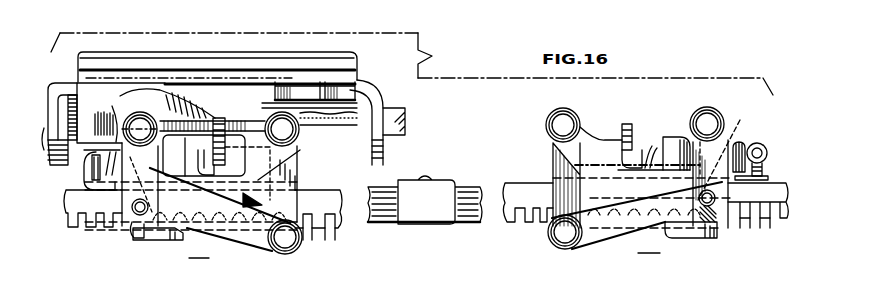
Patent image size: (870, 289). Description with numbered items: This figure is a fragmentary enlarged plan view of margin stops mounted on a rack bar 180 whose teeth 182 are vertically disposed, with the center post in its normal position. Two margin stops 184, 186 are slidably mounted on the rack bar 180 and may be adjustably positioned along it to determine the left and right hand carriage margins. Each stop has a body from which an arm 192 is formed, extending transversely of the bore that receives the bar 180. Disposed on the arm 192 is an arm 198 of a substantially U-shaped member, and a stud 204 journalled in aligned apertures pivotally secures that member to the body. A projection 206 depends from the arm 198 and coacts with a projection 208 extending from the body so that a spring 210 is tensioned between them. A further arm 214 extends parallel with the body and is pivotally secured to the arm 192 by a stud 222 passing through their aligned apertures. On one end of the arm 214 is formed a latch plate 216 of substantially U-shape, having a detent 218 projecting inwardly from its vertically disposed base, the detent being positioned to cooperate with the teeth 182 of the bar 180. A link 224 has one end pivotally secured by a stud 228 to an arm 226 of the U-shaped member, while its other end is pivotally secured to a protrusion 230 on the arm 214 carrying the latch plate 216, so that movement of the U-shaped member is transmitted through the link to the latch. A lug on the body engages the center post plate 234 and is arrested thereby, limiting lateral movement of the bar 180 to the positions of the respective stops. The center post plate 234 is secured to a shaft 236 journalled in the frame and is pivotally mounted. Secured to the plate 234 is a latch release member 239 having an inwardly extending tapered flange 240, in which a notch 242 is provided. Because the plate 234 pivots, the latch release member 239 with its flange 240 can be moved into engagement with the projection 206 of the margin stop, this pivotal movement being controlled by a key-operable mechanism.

The rack bar 180 is at (334, 203).
The teeth 182 is at (332, 212).
The margin stop 184 is at (201, 250).
The margin stop 186 is at (650, 245).
The arm 192 is at (276, 152).
The arm 198 is at (258, 163).
The stud 204 is at (274, 127).
The projection 206 is at (210, 120).
The projection 208 is at (88, 178).
The spring 210 is at (120, 110).
The arm 214 is at (247, 238).
The latch plate 216 is at (163, 240).
The detent 218 is at (131, 231).
The stud 222 is at (289, 238).
The link 224 is at (128, 184).
The arm 226 is at (742, 124).
The stud 228 is at (142, 127).
The protrusion 230 is at (128, 219).
The center post plate 234 is at (356, 56).
The shaft 236 is at (400, 124).
The latch release member 239 is at (253, 77).
The flange 240 is at (183, 96).
The notch 242 is at (219, 117).